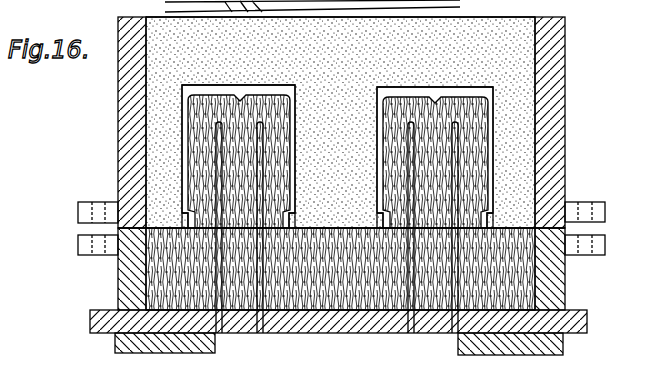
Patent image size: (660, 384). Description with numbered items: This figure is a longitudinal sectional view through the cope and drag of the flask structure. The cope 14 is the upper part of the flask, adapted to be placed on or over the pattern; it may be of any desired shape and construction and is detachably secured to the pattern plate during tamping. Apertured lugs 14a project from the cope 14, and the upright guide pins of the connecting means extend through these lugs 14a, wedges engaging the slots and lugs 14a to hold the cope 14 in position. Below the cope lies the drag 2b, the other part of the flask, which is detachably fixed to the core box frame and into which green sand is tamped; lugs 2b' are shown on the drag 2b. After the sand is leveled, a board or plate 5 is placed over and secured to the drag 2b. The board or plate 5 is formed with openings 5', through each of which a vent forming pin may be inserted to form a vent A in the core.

The cope 14 is at (118, 120).
The apertured lugs 14a is at (92, 201).
The drag 2b is at (330, 269).
The lugs of lower mold section 2b' is at (339, 246).
The board or plate 5 is at (340, 322).
The openings 5' is at (337, 244).
The vent A is at (405, 290).